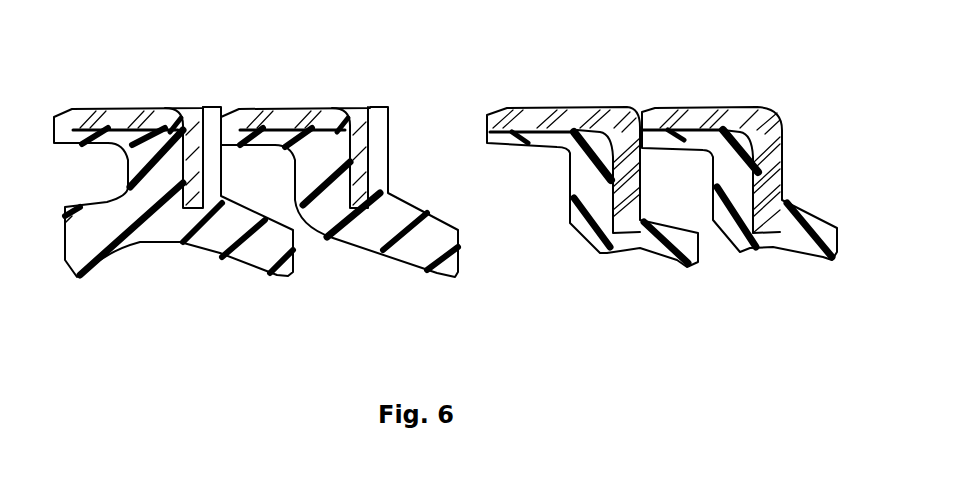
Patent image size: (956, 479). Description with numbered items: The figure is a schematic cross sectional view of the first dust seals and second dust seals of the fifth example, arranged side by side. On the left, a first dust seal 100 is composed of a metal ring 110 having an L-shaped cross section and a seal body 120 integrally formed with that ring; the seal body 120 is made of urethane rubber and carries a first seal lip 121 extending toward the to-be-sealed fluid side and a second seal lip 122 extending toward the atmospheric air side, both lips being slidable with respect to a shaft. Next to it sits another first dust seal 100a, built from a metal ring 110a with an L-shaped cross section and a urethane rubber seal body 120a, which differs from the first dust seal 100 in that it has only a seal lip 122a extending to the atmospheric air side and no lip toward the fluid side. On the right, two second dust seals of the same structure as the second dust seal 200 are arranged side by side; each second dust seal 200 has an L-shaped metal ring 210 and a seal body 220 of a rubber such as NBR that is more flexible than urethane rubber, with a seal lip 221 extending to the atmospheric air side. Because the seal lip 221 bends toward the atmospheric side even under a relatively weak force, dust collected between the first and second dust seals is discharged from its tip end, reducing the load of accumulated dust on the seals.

The first dust seal 100 is at (160, 184).
The first dust seal 100a is at (339, 183).
The metal ring 110 is at (105, 119).
The metal ring 110a is at (286, 120).
The seal body 120 is at (108, 180).
The seal body 120a is at (400, 196).
The first seal lip 121 is at (88, 278).
The second seal lip 122 is at (290, 274).
The seal lip 122a is at (447, 274).
The second dust seal 200 is at (662, 175).
The metal ring 210 is at (566, 117).
The seal body 220 is at (580, 258).
The seal lip 221 is at (683, 258).